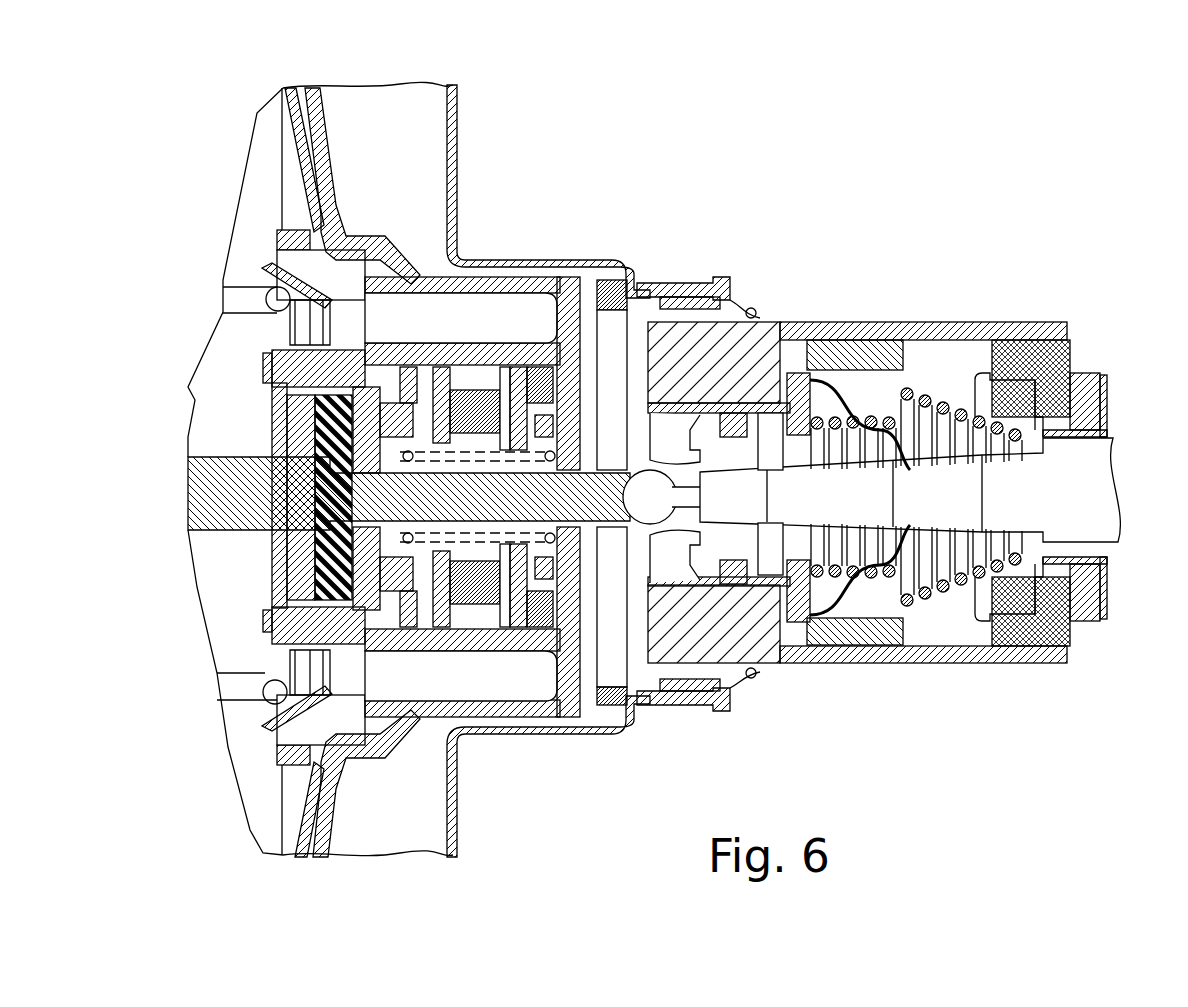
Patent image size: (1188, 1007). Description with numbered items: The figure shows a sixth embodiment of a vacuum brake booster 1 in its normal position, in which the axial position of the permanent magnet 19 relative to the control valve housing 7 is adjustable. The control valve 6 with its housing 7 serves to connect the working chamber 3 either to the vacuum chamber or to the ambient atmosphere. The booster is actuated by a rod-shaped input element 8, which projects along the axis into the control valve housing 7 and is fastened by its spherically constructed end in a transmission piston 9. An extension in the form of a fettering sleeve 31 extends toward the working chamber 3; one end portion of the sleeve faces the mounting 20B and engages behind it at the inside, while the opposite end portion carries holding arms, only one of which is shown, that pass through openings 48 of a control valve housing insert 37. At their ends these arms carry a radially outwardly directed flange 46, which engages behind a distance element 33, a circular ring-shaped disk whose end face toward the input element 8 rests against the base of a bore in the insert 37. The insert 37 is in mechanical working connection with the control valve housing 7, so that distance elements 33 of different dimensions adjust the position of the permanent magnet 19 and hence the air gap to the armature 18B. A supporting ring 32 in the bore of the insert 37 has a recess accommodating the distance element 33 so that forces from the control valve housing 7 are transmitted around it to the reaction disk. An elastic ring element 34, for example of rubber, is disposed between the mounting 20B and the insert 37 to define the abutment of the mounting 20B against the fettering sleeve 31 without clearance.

The vacuum brake booster 1 is at (588, 150).
The working chamber 3 is at (377, 110).
The control valve 6 is at (880, 300).
The control valve housing 7 is at (1017, 325).
The input element 8 is at (1093, 487).
The transmission piston 9 is at (700, 540).
The armature 18B is at (600, 300).
The permanent magnet 19 is at (540, 370).
The mounting 20B is at (490, 403).
The fettering sleeve 31 is at (450, 375).
The supporting ring 32 is at (373, 427).
The distance element 33 is at (290, 430).
The elastic ring element 34 is at (260, 620).
The control valve housing insert 37 is at (257, 714).
The flange 46 is at (300, 450).
The openings 48 is at (395, 417).